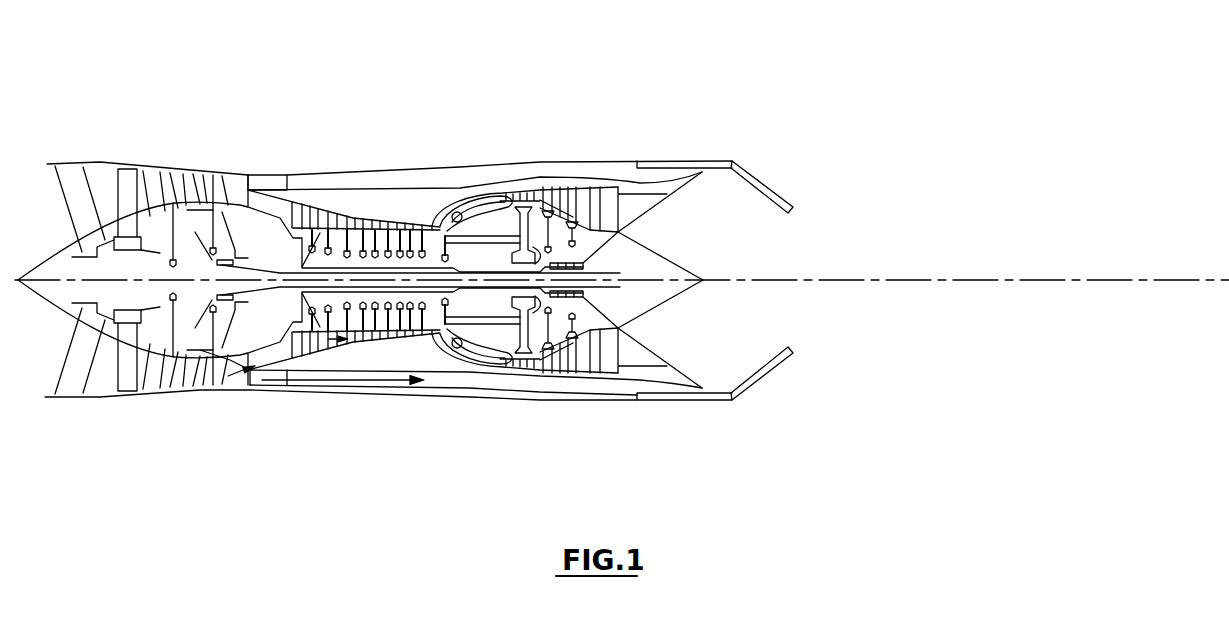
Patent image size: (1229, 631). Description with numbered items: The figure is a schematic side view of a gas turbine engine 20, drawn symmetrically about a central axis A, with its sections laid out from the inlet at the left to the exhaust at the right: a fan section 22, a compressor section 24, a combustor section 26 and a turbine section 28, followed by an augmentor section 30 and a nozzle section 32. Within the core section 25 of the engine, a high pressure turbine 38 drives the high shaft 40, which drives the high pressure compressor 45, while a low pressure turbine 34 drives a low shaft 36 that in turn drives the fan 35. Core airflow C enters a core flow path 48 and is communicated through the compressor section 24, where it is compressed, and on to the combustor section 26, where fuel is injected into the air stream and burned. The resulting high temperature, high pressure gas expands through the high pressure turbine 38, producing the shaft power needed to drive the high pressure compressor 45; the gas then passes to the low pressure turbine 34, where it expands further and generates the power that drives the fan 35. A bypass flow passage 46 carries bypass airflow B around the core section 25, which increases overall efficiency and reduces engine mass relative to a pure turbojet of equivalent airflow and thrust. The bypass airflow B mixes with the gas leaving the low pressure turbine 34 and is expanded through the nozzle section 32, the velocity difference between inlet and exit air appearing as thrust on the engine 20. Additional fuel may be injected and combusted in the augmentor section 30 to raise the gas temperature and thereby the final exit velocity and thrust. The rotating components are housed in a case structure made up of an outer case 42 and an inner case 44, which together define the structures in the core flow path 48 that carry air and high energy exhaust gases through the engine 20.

The gas turbine engine 20 is at (645, 75).
The fan section 22 is at (157, 422).
The compressor section 24 is at (353, 406).
The core section 25 is at (388, 207).
The combustor section 26 is at (482, 407).
The turbine section 28 is at (569, 421).
The augmentor section 30 is at (683, 425).
The nozzle section 32 is at (806, 154).
The low pressure turbine 34 is at (557, 382).
The fan 35 is at (248, 152).
The low shaft 36 is at (245, 300).
The high pressure turbine 38 is at (523, 382).
The high shaft 40 is at (452, 355).
The outer case 42 is at (266, 388).
The inner case 44 is at (392, 352).
The high pressure compressor 45 is at (435, 162).
The bypass flow passage 46 is at (323, 381).
The core flow path 48 is at (243, 374).
The engine axis A is at (1156, 279).
The bypass airflow B is at (338, 385).
The core airflow C is at (250, 370).